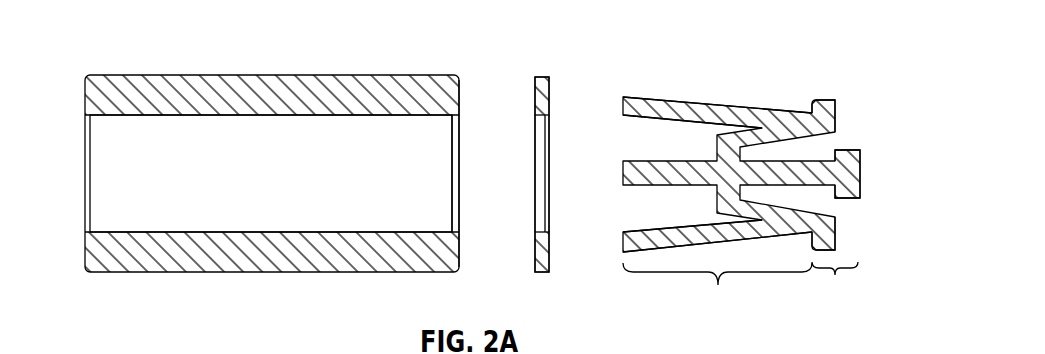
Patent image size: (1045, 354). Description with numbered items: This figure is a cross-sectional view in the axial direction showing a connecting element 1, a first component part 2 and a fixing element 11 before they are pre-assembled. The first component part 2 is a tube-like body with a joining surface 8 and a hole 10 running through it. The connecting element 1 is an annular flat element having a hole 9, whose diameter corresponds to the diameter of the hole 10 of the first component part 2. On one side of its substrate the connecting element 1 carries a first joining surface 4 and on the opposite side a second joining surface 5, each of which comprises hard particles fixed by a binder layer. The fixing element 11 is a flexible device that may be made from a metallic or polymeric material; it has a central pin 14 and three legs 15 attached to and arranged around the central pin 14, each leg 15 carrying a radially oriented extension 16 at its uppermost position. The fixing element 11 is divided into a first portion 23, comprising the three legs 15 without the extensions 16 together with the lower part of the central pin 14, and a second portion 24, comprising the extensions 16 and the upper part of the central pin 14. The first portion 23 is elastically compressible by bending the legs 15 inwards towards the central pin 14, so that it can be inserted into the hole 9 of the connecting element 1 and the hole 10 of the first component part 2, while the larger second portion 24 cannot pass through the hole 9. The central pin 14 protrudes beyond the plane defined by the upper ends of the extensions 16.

The connecting element 1 is at (542, 77).
The first component part 2 is at (172, 93).
The first joining surface 4 is at (535, 90).
The second joining surface 5 is at (549, 245).
The joining surface 8 is at (460, 88).
The hole 9 is at (540, 140).
The hole 10 is at (102, 193).
The fixing element 11 is at (772, 117).
The central pin 14 is at (850, 178).
The legs 15 is at (668, 105).
The extension 16 is at (825, 102).
The first portion 23 is at (717, 290).
The second portion 24 is at (835, 281).